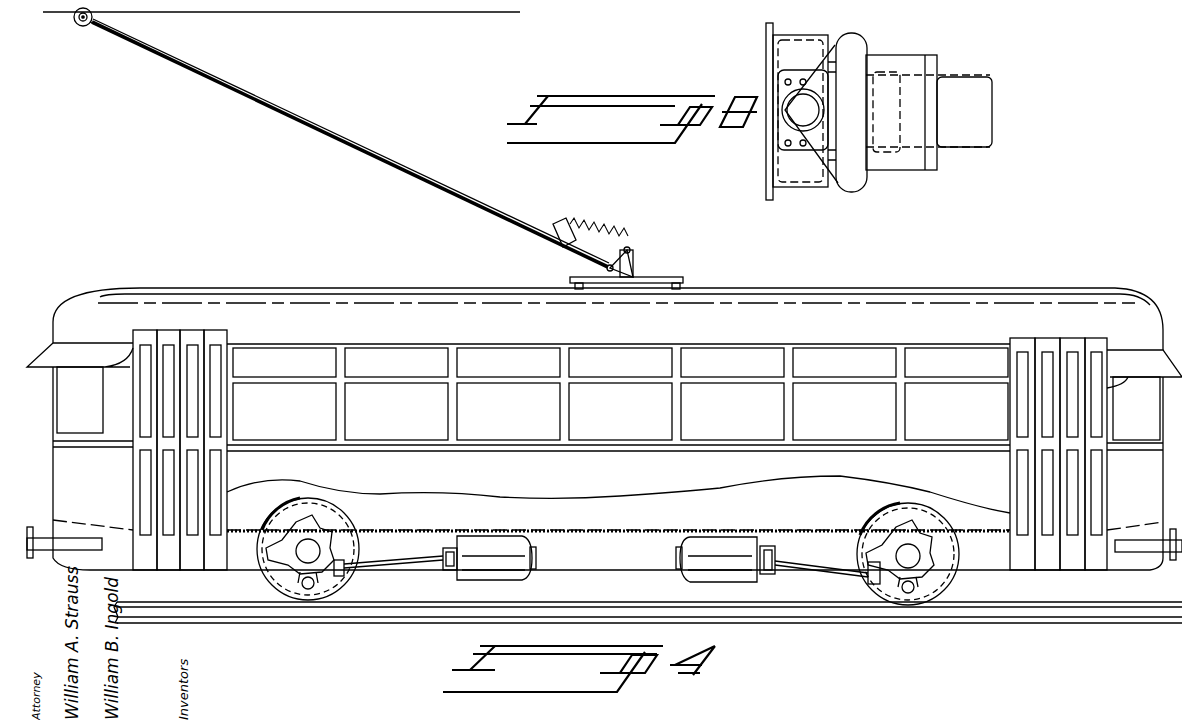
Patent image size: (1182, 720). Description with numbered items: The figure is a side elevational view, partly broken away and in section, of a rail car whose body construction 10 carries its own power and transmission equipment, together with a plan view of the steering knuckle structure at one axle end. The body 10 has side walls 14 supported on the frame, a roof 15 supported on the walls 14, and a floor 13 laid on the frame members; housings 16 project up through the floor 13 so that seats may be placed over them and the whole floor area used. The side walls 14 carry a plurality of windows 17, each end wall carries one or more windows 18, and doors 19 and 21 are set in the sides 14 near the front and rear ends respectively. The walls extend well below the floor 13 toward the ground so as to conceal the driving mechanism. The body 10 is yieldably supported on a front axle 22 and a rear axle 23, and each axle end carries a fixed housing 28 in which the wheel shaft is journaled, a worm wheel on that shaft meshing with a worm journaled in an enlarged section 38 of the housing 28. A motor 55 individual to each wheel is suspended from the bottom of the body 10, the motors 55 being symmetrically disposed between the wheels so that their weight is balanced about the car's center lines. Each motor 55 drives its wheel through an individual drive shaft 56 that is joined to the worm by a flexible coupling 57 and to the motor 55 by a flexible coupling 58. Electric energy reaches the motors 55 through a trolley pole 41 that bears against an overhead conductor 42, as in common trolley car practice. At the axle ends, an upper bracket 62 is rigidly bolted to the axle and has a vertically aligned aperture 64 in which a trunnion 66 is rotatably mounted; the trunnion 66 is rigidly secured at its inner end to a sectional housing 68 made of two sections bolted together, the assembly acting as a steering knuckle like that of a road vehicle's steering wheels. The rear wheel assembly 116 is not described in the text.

In FIG. 4, the body construction 10 is at (238, 302).
In FIG. 4, the floor 13 is at (612, 548).
In FIG. 4, the side walls 14 is at (460, 462).
In FIG. 4, the roof 15 is at (460, 314).
In FIG. 4, the housings 16 is at (352, 520).
In FIG. 4, the rear wheel assembly 116 is at (920, 506).
In FIG. 4, the windows 17 is at (845, 405).
In FIG. 4, the windows 18 is at (82, 387).
In FIG. 4, the door 19 is at (1052, 407).
In FIG. 4, the door 21 is at (220, 414).
In FIG. 4, the front axle 22 is at (958, 594).
In FIG. 4, the rear axle 23 is at (347, 583).
In FIG. 4, the housing 28 is at (318, 540).
In FIG. 4, the enlarged section 38 is at (290, 572).
In FIG. 4, the trolley pole 41 is at (262, 100).
In FIG. 4, the conductor 42 is at (305, 12).
In FIG. 4, the motor 55 is at (505, 542).
In FIG. 4, the drive shaft 56 is at (410, 557).
In FIG. 4, the flexible coupling 57 is at (968, 551).
In FIG. 4, the flexible coupling 58 is at (448, 549).
In FIG. 8, the upper bracket 62 is at (840, 72).
In FIG. 8, the aperture 64 is at (807, 110).
In FIG. 8, the trunnion 66 is at (790, 123).
In FIG. 8, the sectional housing 68 is at (812, 35).